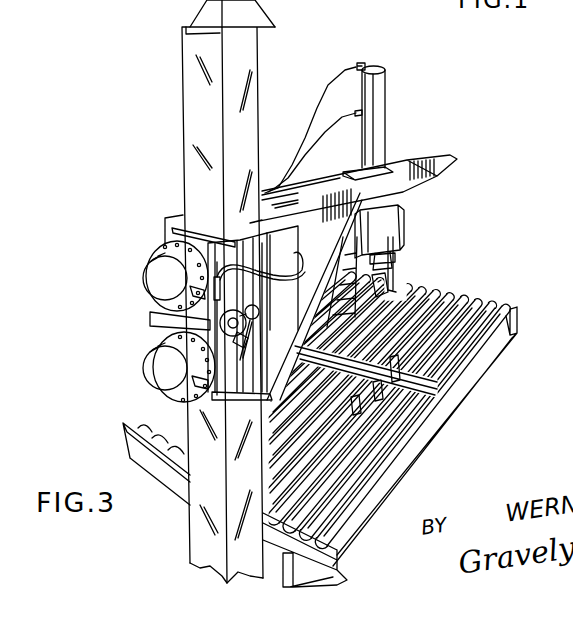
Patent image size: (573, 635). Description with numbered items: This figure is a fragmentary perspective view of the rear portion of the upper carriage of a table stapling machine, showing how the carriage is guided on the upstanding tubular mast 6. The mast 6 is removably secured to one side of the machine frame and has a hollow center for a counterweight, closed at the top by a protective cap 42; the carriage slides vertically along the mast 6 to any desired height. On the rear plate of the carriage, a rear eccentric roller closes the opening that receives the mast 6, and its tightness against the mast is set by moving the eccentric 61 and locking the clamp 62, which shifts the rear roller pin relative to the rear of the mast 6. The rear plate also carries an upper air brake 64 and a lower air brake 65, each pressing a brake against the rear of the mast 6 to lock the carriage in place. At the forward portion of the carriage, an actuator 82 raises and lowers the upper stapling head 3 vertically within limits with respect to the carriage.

The upper stapling head 3 is at (414, 256).
The mast 6 is at (186, 98).
The protective cap 42 is at (258, 2).
The eccentric 61 is at (240, 302).
The clamp 62 is at (243, 331).
The upper air brake 64 is at (160, 280).
The lower air brake 65 is at (165, 372).
The actuator 82 is at (388, 108).